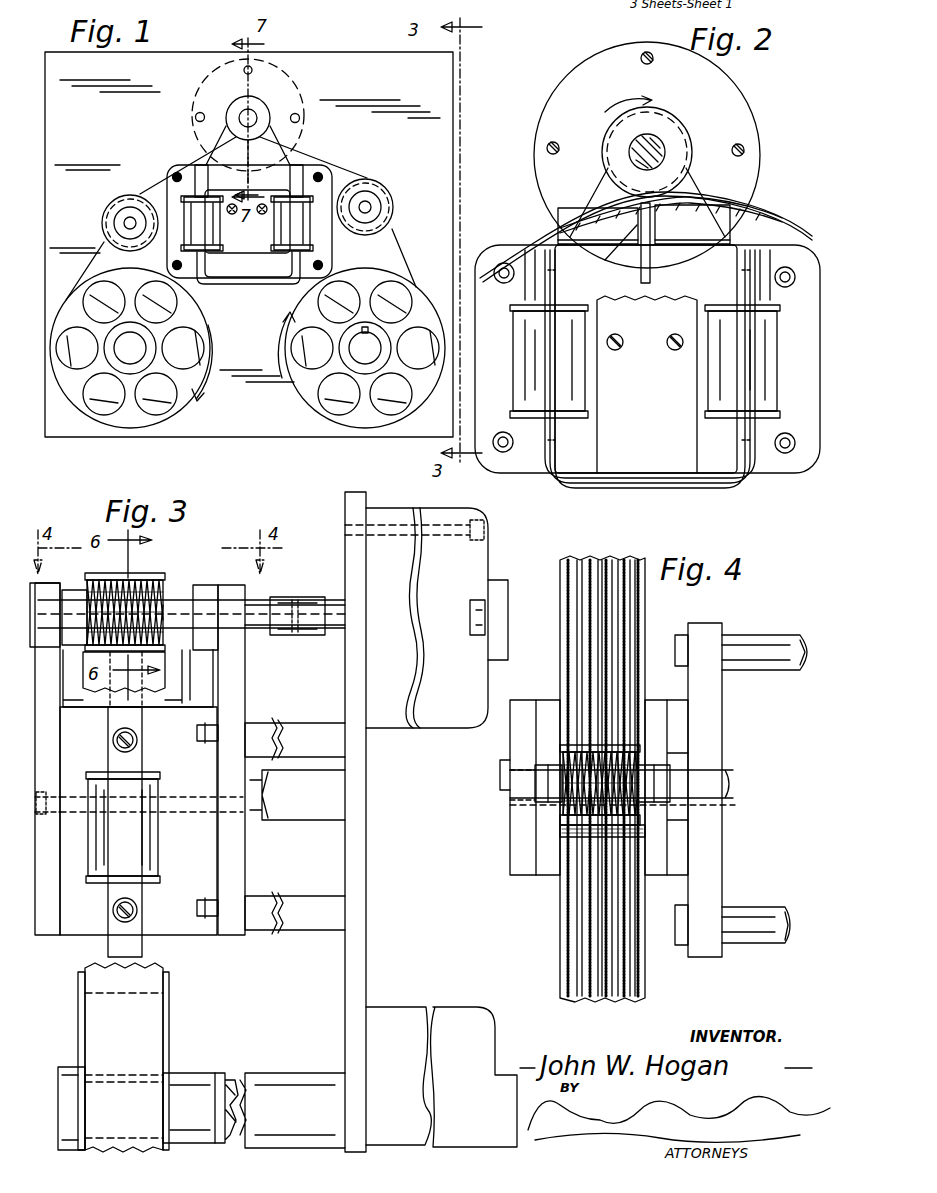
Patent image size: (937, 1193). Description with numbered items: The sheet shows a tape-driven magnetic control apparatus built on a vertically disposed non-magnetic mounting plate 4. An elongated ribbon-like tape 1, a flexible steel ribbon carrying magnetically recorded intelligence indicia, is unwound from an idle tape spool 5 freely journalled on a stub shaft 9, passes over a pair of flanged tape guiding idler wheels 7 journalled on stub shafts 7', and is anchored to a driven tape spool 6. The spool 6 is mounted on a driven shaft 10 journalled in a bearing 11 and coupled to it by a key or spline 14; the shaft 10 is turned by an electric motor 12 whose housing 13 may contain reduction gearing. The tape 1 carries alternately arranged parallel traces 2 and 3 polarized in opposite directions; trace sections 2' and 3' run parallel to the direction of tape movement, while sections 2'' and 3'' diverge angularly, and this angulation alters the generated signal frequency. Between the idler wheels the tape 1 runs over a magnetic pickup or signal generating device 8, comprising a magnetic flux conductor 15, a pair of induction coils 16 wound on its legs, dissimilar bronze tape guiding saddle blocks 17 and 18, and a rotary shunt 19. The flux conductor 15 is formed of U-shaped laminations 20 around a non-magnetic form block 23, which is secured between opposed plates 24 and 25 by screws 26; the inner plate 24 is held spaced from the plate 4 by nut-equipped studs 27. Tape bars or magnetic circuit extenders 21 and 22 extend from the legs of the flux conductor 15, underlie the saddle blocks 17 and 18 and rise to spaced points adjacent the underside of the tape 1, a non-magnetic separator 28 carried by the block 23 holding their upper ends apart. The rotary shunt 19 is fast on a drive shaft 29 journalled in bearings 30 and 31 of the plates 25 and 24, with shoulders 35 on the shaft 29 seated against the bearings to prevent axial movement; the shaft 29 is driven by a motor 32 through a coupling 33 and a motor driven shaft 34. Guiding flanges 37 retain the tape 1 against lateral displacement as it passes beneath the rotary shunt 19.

In FIG. 1, the tape 1 is at (330, 164).
In FIG. 2, the tape 1 is at (538, 235).
In FIG. 3, the tape 1 is at (160, 673).
In FIG. 4, the tape 1 is at (659, 612).
In FIG. 4, the traces 2 is at (593, 778).
In FIG. 4, the parallel trace sections 2' is at (565, 600).
In FIG. 4, the divergent trace sections 2'' is at (569, 986).
In FIG. 4, the traces 3 is at (596, 777).
In FIG. 4, the parallel trace sections 3' is at (576, 576).
In FIG. 4, the divergent trace sections 3'' is at (645, 939).
In FIG. 1, the mounting plate 4 is at (455, 140).
In FIG. 3, the mounting plate 4 is at (366, 960).
In FIG. 1, the idle tape spool 5 is at (118, 420).
In FIG. 1, the driven tape spool 6 is at (350, 420).
In FIG. 3, the driven tape spool 6 is at (78, 1038).
In FIG. 1, the tape guiding idler wheels 7 is at (250, 212).
In FIG. 1, the stub shafts 7' is at (254, 227).
In FIG. 1, the magnetic pickup or signal generating device 8 is at (300, 140).
In FIG. 2, the magnetic pickup or signal generating device 8 is at (587, 172).
In FIG. 3, the magnetic pickup or signal generating device 8 is at (146, 568).
In FIG. 4, the magnetic pickup or signal generating device 8 is at (554, 742).
In FIG. 1, the stub shaft 9 is at (135, 357).
In FIG. 1, the driven shaft 10 is at (376, 357).
In FIG. 3, the driven shaft 10 is at (228, 1090).
In FIG. 3, the bearing 11 is at (285, 1095).
In FIG. 3, the electric motor 12 is at (432, 1012).
In FIG. 3, the motor housing 13 is at (470, 1012).
In FIG. 1, the key or spline 14 is at (363, 329).
In FIG. 3, the key or spline 14 is at (128, 1075).
In FIG. 1, the magnetic flux conductor 15 is at (254, 302).
In FIG. 2, the magnetic flux conductor 15 is at (612, 488).
In FIG. 1, the induction coils 16 is at (288, 222).
In FIG. 2, the induction coils 16 is at (552, 365).
In FIG. 3, the induction coils 16 is at (135, 790).
In FIG. 2, the saddle block 17 is at (618, 239).
In FIG. 2, the saddle block 18 is at (708, 231).
In FIG. 2, the rotary shunt 19 is at (700, 121).
In FIG. 3, the rotary shunt 19 is at (166, 576).
In FIG. 4, the rotary shunt 19 is at (560, 800).
In FIG. 2, the U-shaped laminations 20 is at (572, 486).
In FIG. 2, the tape bar or magnetic circuit extender 21 is at (615, 250).
In FIG. 2, the tape bar or magnetic circuit extender 22 is at (708, 264).
In FIG. 2, the form block 23 is at (626, 299).
In FIG. 3, the form block 23 is at (192, 860).
In FIG. 4, the form block 23 is at (665, 878).
In FIG. 1, the inner plate 24 is at (332, 239).
In FIG. 2, the inner plate 24 is at (775, 470).
In FIG. 3, the inner plate 24 is at (245, 692).
In FIG. 4, the inner plate 24 is at (722, 850).
In FIG. 1, the plate 25 is at (258, 270).
In FIG. 2, the plate 25 is at (657, 329).
In FIG. 3, the plate 25 is at (44, 933).
In FIG. 4, the plate 25 is at (512, 876).
In FIG. 2, the screws 26 is at (665, 356).
In FIG. 3, the screws 26 is at (70, 812).
In FIG. 2, the nut-equipped studs 27 is at (488, 470).
In FIG. 3, the nut-equipped studs 27 is at (306, 880).
In FIG. 4, the nut-equipped studs 27 is at (765, 912).
In FIG. 2, the separator 28 is at (650, 262).
In FIG. 1, the drive shaft 29 is at (248, 118).
In FIG. 2, the drive shaft 29 is at (650, 147).
In FIG. 3, the drive shaft 29 is at (258, 652).
In FIG. 4, the drive shaft 29 is at (735, 780).
In FIG. 1, the bearing 30 is at (235, 126).
In FIG. 3, the bearing 30 is at (55, 616).
In FIG. 4, the bearing 30 is at (535, 790).
In FIG. 3, the bearing 31 is at (222, 590).
In FIG. 4, the bearing 31 is at (695, 790).
In FIG. 1, the motor 32 is at (288, 80).
In FIG. 2, the motor 32 is at (752, 130).
In FIG. 3, the motor 32 is at (452, 591).
In FIG. 3, the coupling 33 is at (298, 597).
In FIG. 3, the motor driven shaft 34 is at (328, 598).
In FIG. 3, the shoulders 35 is at (205, 588).
In FIG. 4, the shoulders 35 is at (545, 802).
In FIG. 2, the guiding flanges 37 is at (740, 198).
In FIG. 3, the guiding flanges 37 is at (210, 658).
In FIG. 4, the guiding flanges 37 is at (548, 884).